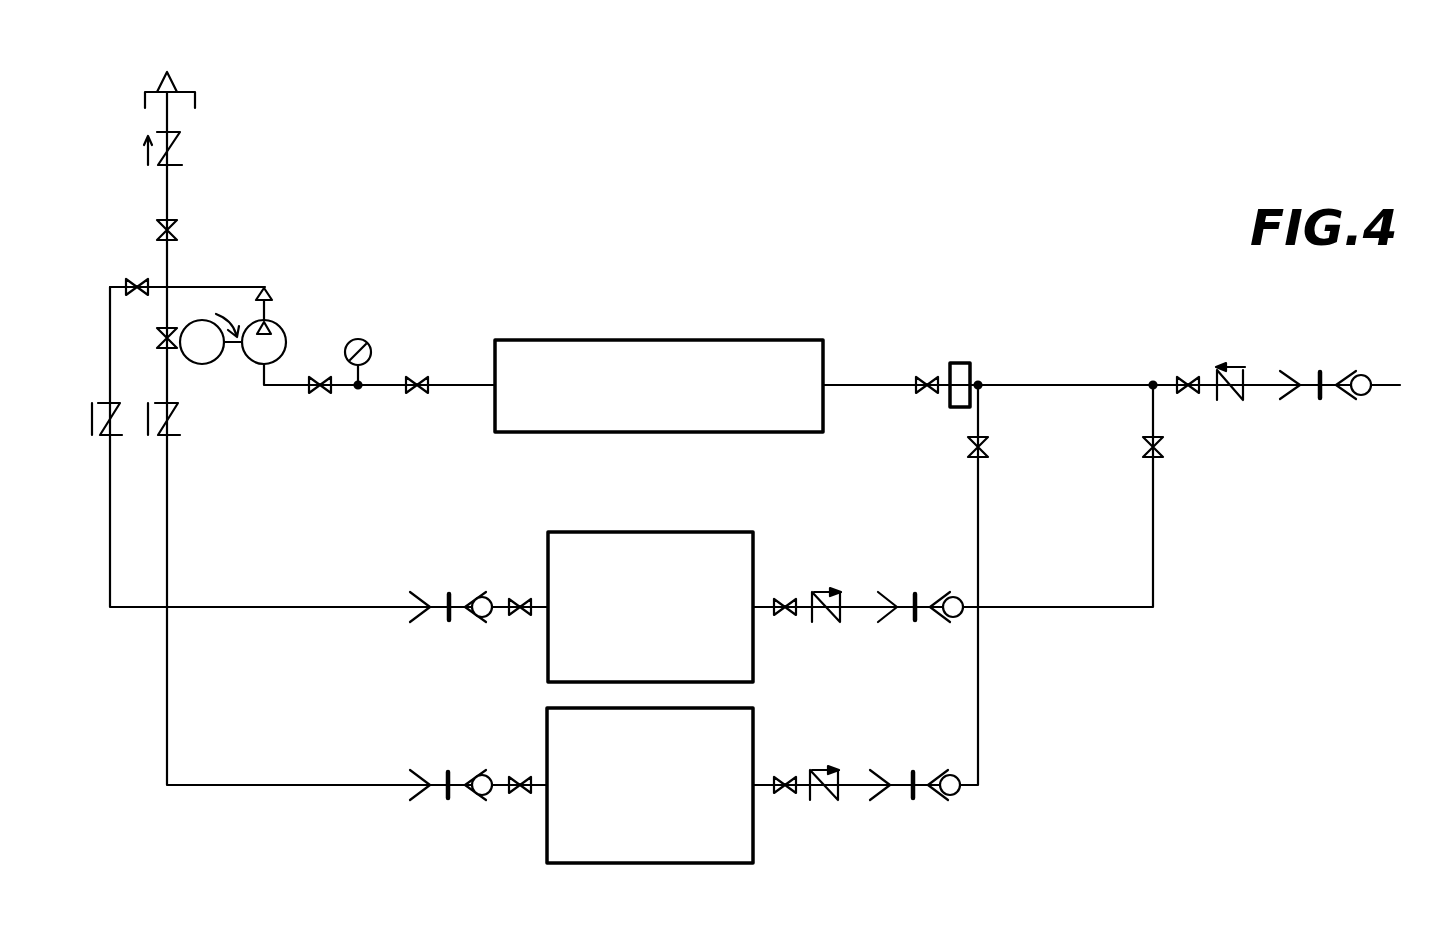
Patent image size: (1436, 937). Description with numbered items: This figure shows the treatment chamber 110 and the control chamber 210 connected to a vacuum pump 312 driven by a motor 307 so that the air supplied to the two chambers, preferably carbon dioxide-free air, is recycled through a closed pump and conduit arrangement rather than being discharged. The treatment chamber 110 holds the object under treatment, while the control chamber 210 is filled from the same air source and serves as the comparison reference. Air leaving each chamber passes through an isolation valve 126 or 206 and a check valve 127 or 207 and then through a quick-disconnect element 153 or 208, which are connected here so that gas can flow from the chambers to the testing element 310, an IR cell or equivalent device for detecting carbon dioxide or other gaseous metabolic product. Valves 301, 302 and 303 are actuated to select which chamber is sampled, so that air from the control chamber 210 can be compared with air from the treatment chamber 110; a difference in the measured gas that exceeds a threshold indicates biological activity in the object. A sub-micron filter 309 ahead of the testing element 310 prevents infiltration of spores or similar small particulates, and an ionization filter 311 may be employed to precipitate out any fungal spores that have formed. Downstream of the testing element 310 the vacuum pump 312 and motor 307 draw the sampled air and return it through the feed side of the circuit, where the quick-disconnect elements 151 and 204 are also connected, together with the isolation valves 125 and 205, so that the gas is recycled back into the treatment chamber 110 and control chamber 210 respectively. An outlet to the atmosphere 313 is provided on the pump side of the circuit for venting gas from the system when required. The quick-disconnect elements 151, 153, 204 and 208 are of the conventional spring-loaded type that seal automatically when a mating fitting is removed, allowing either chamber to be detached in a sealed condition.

The outlet to the atmosphere 313 is at (182, 76).
The motor 307 is at (201, 320).
The vacuum pump 312 is at (288, 340).
The ionization filter 311 is at (370, 344).
The testing element 310 is at (748, 340).
The valve 303 is at (920, 384).
The sub-micron filter 309 is at (960, 362).
The valve 302 is at (990, 452).
The valve 301 is at (1162, 452).
The treatment chamber 110 is at (636, 532).
The quick-disconnect element 151 is at (448, 585).
The isolation valve 125 is at (508, 597).
The isolation valve 126 is at (780, 596).
The check valve 127 is at (840, 598).
The quick-disconnect element 153 is at (888, 592).
The control chamber 210 is at (648, 864).
The quick-disconnect element 204 is at (425, 795).
The isolation valve 205 is at (528, 797).
The isolation valve 206 is at (785, 774).
The check valve 207 is at (838, 776).
The quick-disconnect element 208 is at (945, 772).